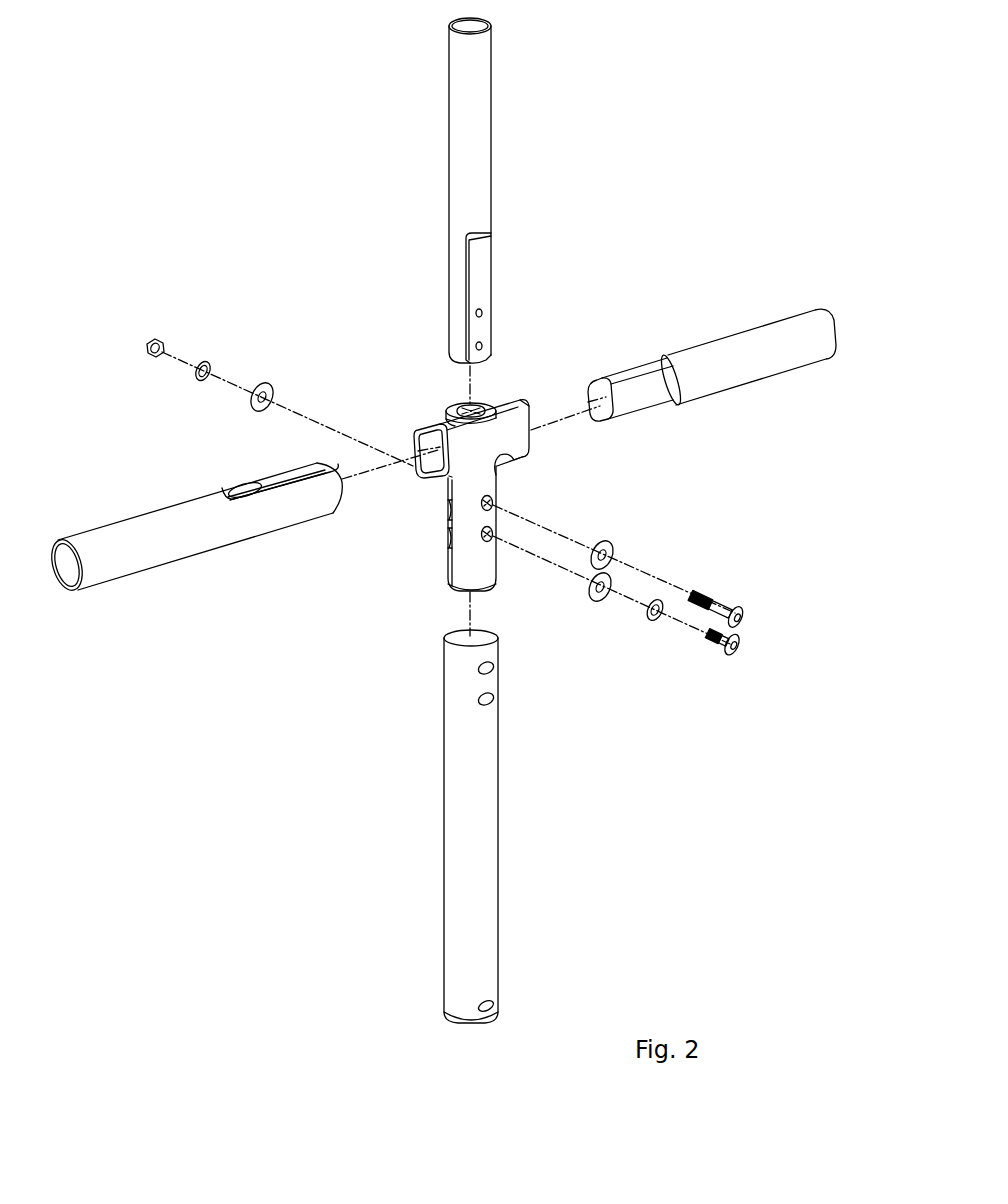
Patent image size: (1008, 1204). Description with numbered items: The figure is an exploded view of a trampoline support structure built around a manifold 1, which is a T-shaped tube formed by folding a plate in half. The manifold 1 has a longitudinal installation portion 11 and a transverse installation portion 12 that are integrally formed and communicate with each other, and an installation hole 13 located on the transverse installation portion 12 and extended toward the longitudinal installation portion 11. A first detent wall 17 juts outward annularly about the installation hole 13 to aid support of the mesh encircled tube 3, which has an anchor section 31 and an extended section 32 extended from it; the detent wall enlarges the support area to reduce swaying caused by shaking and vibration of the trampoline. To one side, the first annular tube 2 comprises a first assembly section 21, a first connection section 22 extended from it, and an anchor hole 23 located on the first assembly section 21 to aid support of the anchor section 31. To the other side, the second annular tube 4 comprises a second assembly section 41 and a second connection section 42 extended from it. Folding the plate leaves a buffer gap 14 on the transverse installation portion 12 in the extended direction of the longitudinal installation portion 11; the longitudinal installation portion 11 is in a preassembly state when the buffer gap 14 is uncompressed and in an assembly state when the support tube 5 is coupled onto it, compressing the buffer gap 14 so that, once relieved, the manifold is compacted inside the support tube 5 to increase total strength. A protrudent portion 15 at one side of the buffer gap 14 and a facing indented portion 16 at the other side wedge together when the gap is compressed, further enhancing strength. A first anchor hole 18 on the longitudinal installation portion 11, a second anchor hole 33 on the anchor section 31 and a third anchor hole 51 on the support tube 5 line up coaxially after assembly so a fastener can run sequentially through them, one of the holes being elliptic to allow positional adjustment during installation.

The manifold 1 is at (410, 445).
The longitudinal installation portion 11 is at (492, 506).
The transverse installation portion 12 is at (540, 432).
The installation hole 13 is at (462, 410).
The buffer gap 14 is at (446, 581).
The protrudent portion 15 is at (448, 510).
The indented portion 16 is at (448, 540).
The first detent wall 17 is at (496, 405).
The first anchor hole 18 is at (491, 537).
The first annular tube 2 is at (194, 543).
The first assembly section 21 is at (289, 478).
The first connection section 22 is at (187, 540).
The anchor hole 23 is at (240, 487).
The mesh encircled tube 3 is at (468, 190).
The anchor section 31 is at (480, 252).
The extended section 32 is at (478, 86).
The second anchor hole 33 is at (476, 312).
The second annular tube 4 is at (712, 371).
The second assembly section 41 is at (628, 375).
The second connection section 42 is at (702, 358).
The support tube 5 is at (476, 826).
The third anchor hole 51 is at (479, 700).